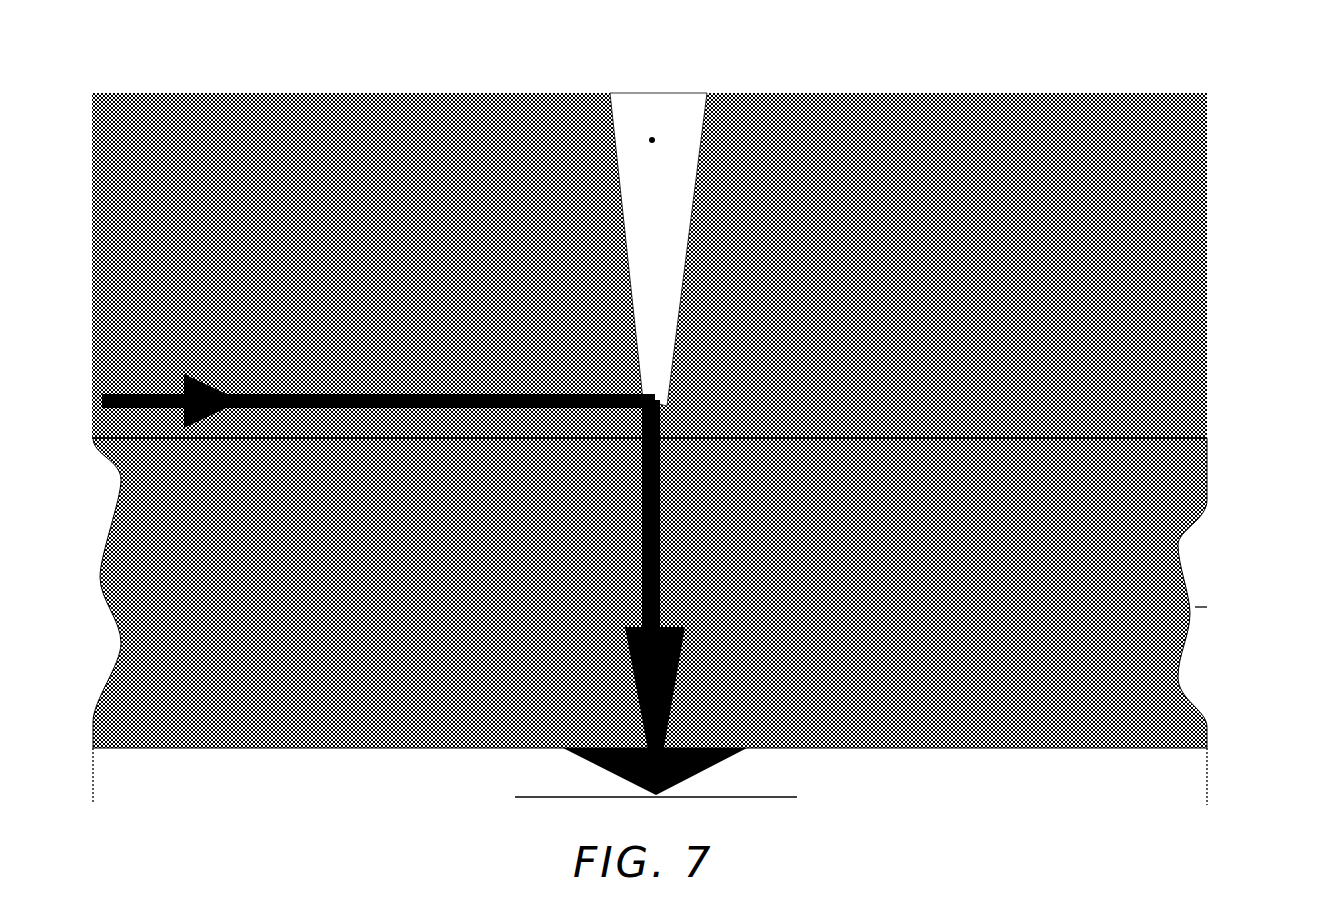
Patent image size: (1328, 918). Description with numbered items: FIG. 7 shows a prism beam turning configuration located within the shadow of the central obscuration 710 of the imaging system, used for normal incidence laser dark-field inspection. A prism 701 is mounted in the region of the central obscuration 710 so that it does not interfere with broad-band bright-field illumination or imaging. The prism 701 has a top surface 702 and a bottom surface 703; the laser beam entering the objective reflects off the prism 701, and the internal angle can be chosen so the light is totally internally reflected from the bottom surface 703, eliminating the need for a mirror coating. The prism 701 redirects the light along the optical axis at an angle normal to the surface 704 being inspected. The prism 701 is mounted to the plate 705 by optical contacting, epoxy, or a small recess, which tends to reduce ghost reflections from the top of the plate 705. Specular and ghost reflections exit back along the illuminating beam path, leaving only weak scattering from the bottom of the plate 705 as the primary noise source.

The central obscuration 710 is at (652, 140).
The prism 701 is at (643, 398).
The top surface 702 is at (665, 408).
The plate 705 is at (1152, 440).
The bottom surface 703 is at (641, 432).
The surface 704 is at (666, 816).